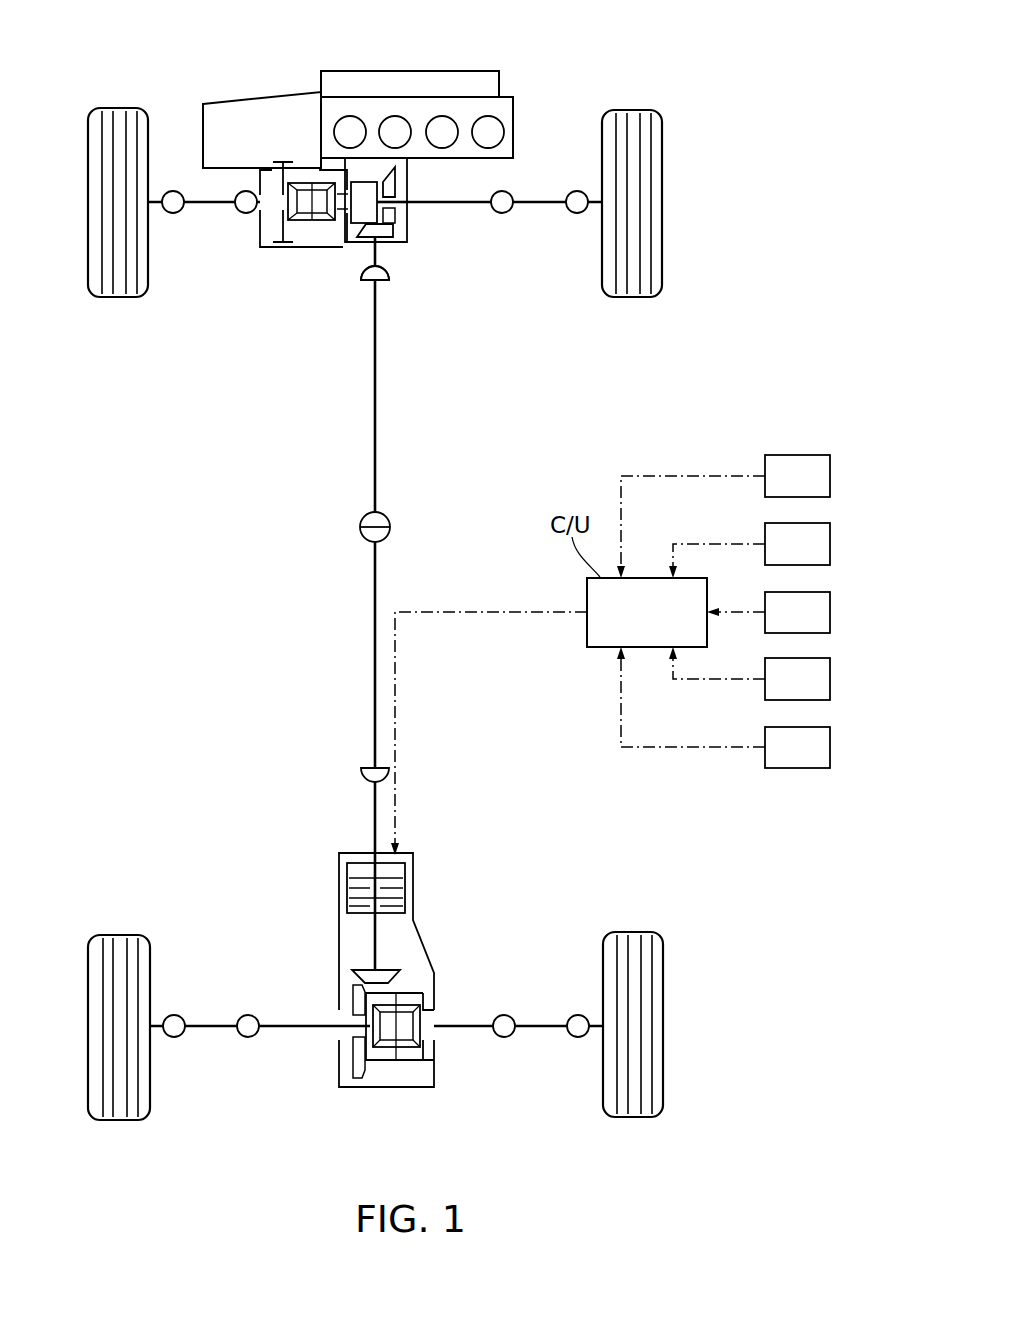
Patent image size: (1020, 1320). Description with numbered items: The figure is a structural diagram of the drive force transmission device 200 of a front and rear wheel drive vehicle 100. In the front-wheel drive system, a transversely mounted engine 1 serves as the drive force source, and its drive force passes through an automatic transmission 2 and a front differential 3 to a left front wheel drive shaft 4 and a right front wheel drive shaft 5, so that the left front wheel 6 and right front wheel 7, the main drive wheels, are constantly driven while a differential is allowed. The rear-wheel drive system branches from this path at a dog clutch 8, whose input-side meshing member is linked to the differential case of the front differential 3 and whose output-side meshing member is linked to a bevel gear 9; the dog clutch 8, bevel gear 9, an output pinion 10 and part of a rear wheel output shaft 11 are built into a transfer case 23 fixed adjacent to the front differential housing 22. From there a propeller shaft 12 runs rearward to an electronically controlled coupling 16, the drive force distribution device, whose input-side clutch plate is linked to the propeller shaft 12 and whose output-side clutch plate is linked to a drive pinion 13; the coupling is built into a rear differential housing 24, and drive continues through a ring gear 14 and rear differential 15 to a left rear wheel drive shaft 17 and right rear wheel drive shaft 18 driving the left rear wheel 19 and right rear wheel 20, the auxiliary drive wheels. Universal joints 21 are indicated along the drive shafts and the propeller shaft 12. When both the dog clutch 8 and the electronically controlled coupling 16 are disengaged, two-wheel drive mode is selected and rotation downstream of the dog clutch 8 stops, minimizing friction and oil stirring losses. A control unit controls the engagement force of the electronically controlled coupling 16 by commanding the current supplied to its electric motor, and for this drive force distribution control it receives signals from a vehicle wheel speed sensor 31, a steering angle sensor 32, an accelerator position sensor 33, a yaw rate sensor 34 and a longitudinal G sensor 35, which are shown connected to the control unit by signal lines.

The transversely mounted engine 1 is at (416, 66).
The automatic transmission 2 is at (257, 94).
The front differential 3 is at (313, 230).
The left front wheel drive shaft 4 is at (203, 205).
The right front wheel drive shaft 5 is at (540, 205).
The left front wheel 6 is at (108, 108).
The right front wheel 7 is at (630, 110).
The dog clutch 8 is at (364, 180).
The bevel gear 9 is at (393, 218).
The output pinion 10 is at (363, 240).
The rear wheel output shaft 11 is at (390, 272).
The propeller shaft 12 is at (374, 433).
The drive pinion 13 is at (366, 972).
The ring gear 14 is at (352, 1062).
The rear differential 15 is at (397, 1066).
The electronically controlled coupling 16 is at (418, 884).
The left rear wheel drive shaft 17 is at (213, 1030).
The right rear wheel drive shaft 18 is at (545, 1030).
The left rear wheel 19 is at (110, 936).
The right rear wheel 20 is at (642, 932).
The universal joint 21 is at (173, 214).
The front differential housing 22 is at (272, 250).
The transfer case 23 is at (397, 240).
The rear differential housing 24 is at (424, 948).
The vehicle wheel speed sensor 31 is at (812, 456).
The steering angle sensor 32 is at (812, 524).
The accelerator position sensor 33 is at (812, 593).
The yaw rate sensor 34 is at (812, 659).
The longitudinal G sensor 35 is at (812, 728).
The front and rear wheel drive vehicle 100 is at (712, 356).
The drive force transmission device 200 is at (230, 494).